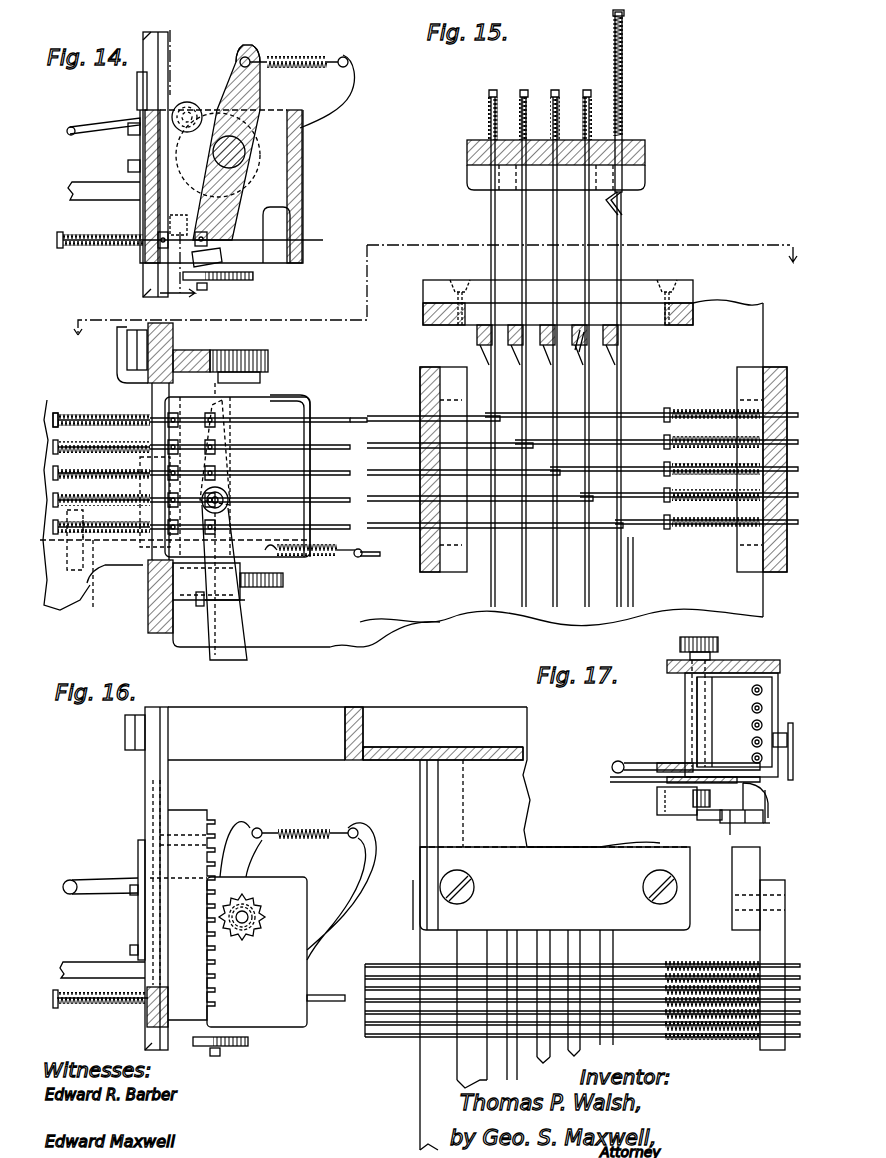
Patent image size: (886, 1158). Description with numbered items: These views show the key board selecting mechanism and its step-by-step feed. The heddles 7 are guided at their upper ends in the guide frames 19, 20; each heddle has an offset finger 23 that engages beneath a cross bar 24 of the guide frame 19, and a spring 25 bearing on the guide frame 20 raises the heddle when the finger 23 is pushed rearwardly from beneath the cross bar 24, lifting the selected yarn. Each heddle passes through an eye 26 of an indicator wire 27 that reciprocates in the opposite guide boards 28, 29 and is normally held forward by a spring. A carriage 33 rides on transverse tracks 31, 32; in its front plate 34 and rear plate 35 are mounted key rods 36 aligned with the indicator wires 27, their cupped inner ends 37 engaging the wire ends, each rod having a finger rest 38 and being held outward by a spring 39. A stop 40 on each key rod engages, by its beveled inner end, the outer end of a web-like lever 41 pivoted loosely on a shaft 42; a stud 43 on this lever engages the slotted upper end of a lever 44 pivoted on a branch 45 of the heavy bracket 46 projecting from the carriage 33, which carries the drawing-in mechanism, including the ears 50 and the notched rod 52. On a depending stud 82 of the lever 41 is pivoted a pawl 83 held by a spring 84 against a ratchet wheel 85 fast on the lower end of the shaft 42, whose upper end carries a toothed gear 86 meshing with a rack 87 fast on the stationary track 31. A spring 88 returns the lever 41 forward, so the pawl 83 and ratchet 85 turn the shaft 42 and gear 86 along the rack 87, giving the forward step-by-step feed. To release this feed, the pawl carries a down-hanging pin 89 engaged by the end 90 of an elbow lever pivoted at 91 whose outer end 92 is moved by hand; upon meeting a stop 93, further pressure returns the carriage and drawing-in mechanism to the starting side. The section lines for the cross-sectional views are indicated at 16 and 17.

In FIG. 15, the heddles 7 is at (665, 580).
In FIG. 16, the heddles 7 is at (495, 960).
In FIG. 15, the arms 16 is at (436, 281).
In FIG. 14, the rock-shaft 17 is at (177, 271).
In FIG. 15, the guide frame 19 is at (640, 288).
In FIG. 16, the guide frame 19 is at (555, 888).
In FIG. 15, the guide frame 20 is at (646, 152).
In FIG. 15, the offset finger 23 is at (620, 208).
In FIG. 15, the cross bar 24 is at (612, 340).
In FIG. 16, the cross bar 24 is at (615, 1045).
In FIG. 15, the spring 25 is at (623, 106).
In FIG. 15, the eye 26 is at (572, 468).
In FIG. 16, the eye 26 is at (605, 962).
In FIG. 15, the indicator wire 27 is at (388, 525).
In FIG. 16, the indicator wire 27 is at (378, 965).
In FIG. 15, the guide board 28 is at (430, 572).
In FIG. 15, the guide board 29 is at (770, 572).
In FIG. 16, the guide board 29 is at (760, 1040).
In FIG. 15, the transverse track 31 is at (125, 365).
In FIG. 15, the transverse track 32 is at (160, 633).
In FIG. 15, the carriage 33 is at (160, 410).
In FIG. 15, the front plate 34 is at (160, 515).
In FIG. 15, the rear plate 35 is at (312, 440).
In FIG. 16, the rear plate 35 is at (147, 1015).
In FIG. 15, the key rods 36 is at (325, 417).
In FIG. 16, the key rods 36 is at (325, 995).
In FIG. 15, the cupped inner ends 37 is at (360, 418).
In FIG. 14, the finger rest 38 is at (58, 248).
In FIG. 15, the finger rest 38 is at (63, 534).
In FIG. 16, the finger rest 38 is at (54, 1010).
In FIG. 14, the spring 39 is at (80, 236).
In FIG. 15, the spring 39 is at (70, 560).
In FIG. 16, the spring 39 is at (88, 1005).
In FIG. 14, the stop 40 is at (222, 258).
In FIG. 15, the stop 40 is at (225, 395).
In FIG. 17, the stop 40 is at (752, 756).
In FIG. 14, the web-like lever 41 is at (210, 232).
In FIG. 15, the web-like lever 41 is at (225, 425).
In FIG. 17, the web-like lever 41 is at (763, 692).
In FIG. 14, the shaft 42 is at (250, 160).
In FIG. 16, the shaft 42 is at (252, 910).
In FIG. 17, the shaft 42 is at (697, 712).
In FIG. 14, the stud 43 is at (207, 290).
In FIG. 16, the stud 43 is at (222, 1054).
In FIG. 17, the stud 43 is at (787, 744).
In FIG. 14, the lever 44 is at (253, 278).
In FIG. 15, the lever 44 is at (235, 630).
In FIG. 16, the lever 44 is at (248, 1042).
In FIG. 17, the lever 44 is at (793, 780).
In FIG. 15, the branch 45 is at (75, 570).
In FIG. 14, the bracket 46 is at (82, 195).
In FIG. 15, the bracket 46 is at (95, 583).
In FIG. 16, the bracket 46 is at (80, 970).
In FIG. 15, the ears 50 is at (707, 408).
In FIG. 16, the ears 50 is at (725, 965).
In FIG. 15, the rod 52 is at (306, 623).
In FIG. 17, the depending stud 82 is at (765, 822).
In FIG. 14, the pawl 83 is at (170, 221).
In FIG. 17, the pawl 83 is at (766, 805).
In FIG. 14, the spring 84 is at (160, 254).
In FIG. 15, the spring 84 is at (205, 580).
In FIG. 17, the spring 84 is at (730, 830).
In FIG. 14, the ratchet wheel 85 is at (262, 140).
In FIG. 15, the ratchet wheel 85 is at (285, 585).
In FIG. 17, the ratchet wheel 85 is at (693, 797).
In FIG. 15, the toothed gear 86 is at (270, 358).
In FIG. 16, the toothed gear 86 is at (248, 925).
In FIG. 17, the toothed gear 86 is at (719, 644).
In FIG. 15, the rack 87 is at (200, 360).
In FIG. 16, the rack 87 is at (195, 815).
In FIG. 14, the spring 88 is at (293, 54).
In FIG. 15, the spring 88 is at (335, 560).
In FIG. 16, the spring 88 is at (305, 826).
In FIG. 17, the spring 88 is at (618, 760).
In FIG. 14, the down-hanging pin 89 is at (140, 167).
In FIG. 15, the down-hanging pin 89 is at (200, 606).
In FIG. 17, the down-hanging pin 89 is at (725, 823).
In FIG. 14, the end of elbow lever 90 is at (165, 140).
In FIG. 17, the end of elbow lever 90 is at (697, 818).
In FIG. 14, the pivot 91 is at (192, 103).
In FIG. 17, the pivot 91 is at (657, 810).
In FIG. 14, the elbow lever 92 is at (112, 122).
In FIG. 15, the elbow lever 92 is at (93, 612).
In FIG. 16, the elbow lever 92 is at (85, 882).
In FIG. 17, the elbow lever 92 is at (672, 755).
In FIG. 14, the stop 93 is at (137, 80).
In FIG. 16, the stop 93 is at (138, 848).